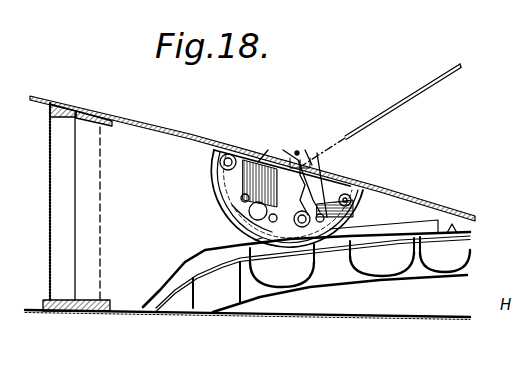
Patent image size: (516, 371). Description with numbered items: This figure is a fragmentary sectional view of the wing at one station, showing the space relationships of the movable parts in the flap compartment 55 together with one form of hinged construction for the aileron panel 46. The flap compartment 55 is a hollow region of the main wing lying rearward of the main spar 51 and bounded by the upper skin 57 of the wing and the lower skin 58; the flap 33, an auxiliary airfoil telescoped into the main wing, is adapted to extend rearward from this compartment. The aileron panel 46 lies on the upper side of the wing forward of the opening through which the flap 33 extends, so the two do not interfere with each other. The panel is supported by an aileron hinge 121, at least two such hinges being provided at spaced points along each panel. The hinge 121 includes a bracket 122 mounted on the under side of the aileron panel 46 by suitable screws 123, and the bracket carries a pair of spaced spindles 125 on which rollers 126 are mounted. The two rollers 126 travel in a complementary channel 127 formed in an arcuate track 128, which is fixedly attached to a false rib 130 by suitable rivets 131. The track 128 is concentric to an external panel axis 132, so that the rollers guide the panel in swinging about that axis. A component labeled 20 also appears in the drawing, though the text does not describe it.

The vehicle 20 is at (312, 156).
The flap 33 is at (452, 226).
The aileron panel 46 is at (433, 80).
The main spar 51 is at (48, 130).
The flap compartment 55 is at (130, 209).
The upper skin 57 is at (130, 120).
The lower skin 58 is at (257, 318).
The aileron hinge 121 is at (218, 210).
The bracket 122 is at (338, 190).
The screws 123 is at (282, 149).
The spindles 125 is at (214, 161).
The rollers 126 is at (227, 147).
The channel 127 is at (222, 198).
The arcuate track 128 is at (217, 182).
The false rib 130 is at (127, 290).
The rivets 131 is at (233, 205).
The external panel axis 132 is at (295, 152).